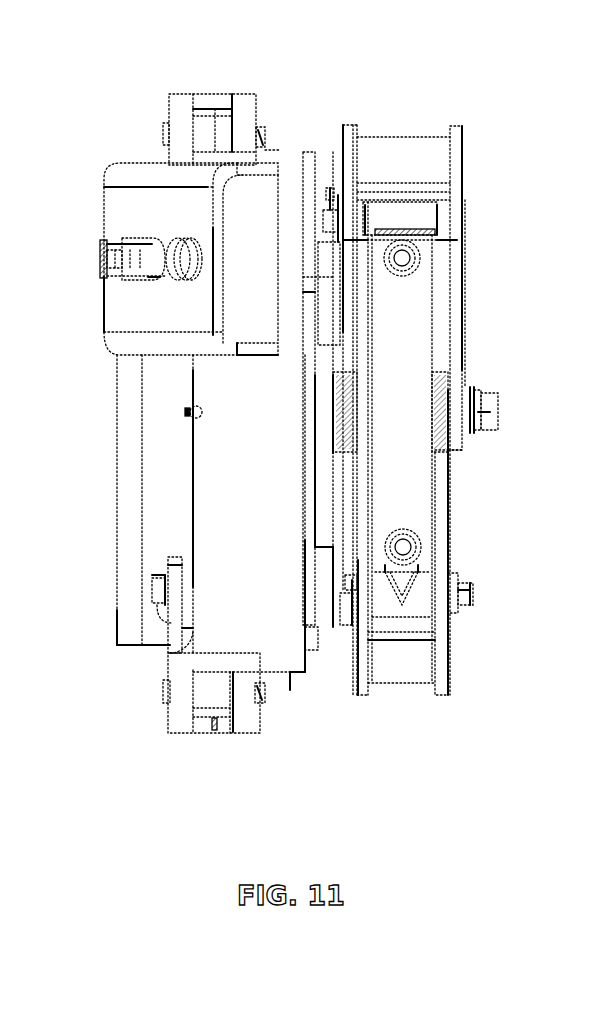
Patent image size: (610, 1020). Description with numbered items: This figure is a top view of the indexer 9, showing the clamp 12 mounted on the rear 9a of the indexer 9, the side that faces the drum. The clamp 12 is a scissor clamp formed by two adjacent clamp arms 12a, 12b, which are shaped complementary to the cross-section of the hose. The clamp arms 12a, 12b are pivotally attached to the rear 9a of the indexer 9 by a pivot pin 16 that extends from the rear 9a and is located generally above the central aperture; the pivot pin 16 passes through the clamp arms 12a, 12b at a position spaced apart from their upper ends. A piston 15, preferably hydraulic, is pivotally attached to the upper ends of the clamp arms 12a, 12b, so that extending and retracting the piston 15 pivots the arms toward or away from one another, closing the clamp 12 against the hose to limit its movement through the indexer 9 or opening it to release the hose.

The indexer 9 is at (123, 96).
The rear of the indexer 9a is at (311, 660).
The clamp 12 is at (381, 99).
The clamp arm 12a is at (448, 670).
The clamp arm 12b is at (462, 146).
The piston 15 is at (432, 480).
The pivot pin 16 is at (498, 390).